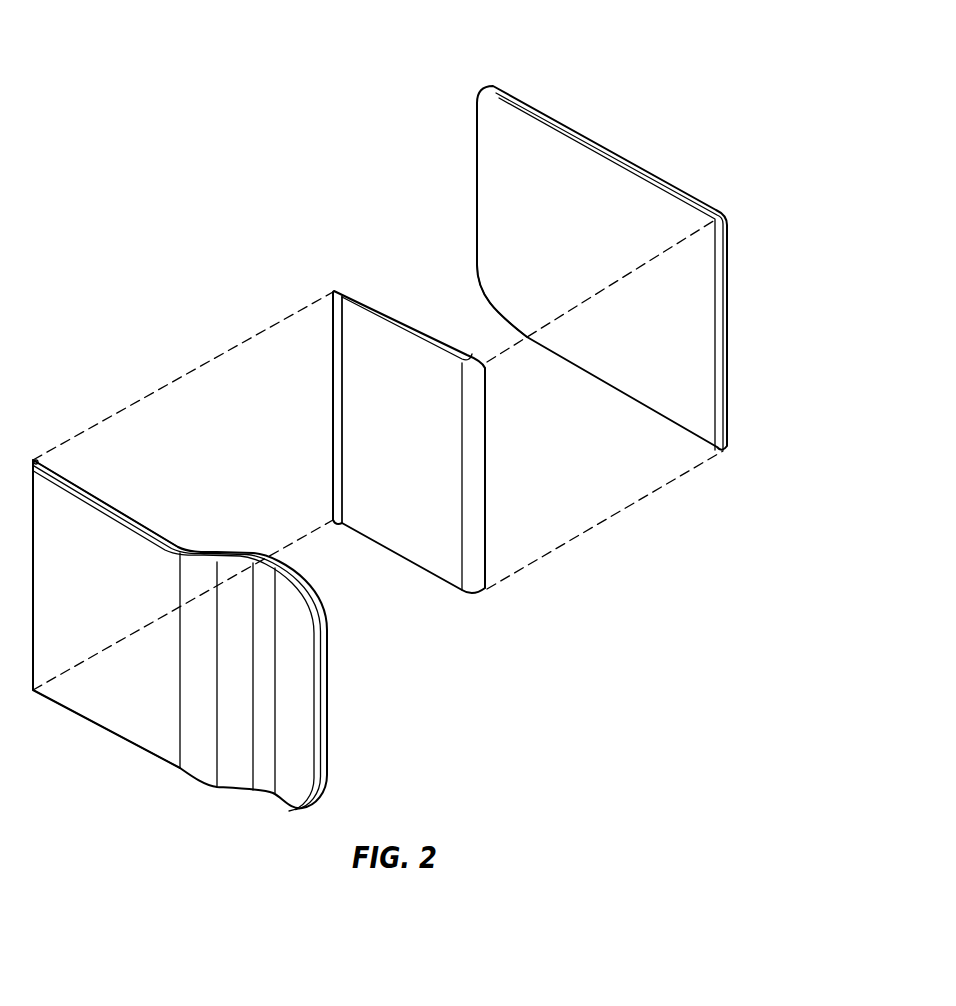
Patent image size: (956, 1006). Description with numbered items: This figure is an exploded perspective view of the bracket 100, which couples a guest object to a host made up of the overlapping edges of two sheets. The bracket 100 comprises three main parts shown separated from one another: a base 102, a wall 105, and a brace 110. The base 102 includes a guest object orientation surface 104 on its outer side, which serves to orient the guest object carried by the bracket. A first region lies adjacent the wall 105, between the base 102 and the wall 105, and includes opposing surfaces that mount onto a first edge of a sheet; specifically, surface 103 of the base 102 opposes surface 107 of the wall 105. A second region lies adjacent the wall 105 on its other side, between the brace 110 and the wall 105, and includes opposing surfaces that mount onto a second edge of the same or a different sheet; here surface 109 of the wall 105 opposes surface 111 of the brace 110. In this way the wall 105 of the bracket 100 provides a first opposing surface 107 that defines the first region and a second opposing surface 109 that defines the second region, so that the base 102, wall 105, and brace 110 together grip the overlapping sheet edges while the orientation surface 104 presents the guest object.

The bracket 100 is at (218, 183).
The base 102 is at (328, 752).
The surface 103 is at (130, 497).
The guest object orientation surface 104 is at (134, 708).
The wall 105 is at (363, 290).
The surface 107 is at (375, 330).
The surface 109 is at (497, 440).
The brace 110 is at (532, 100).
The surface 111 is at (519, 243).